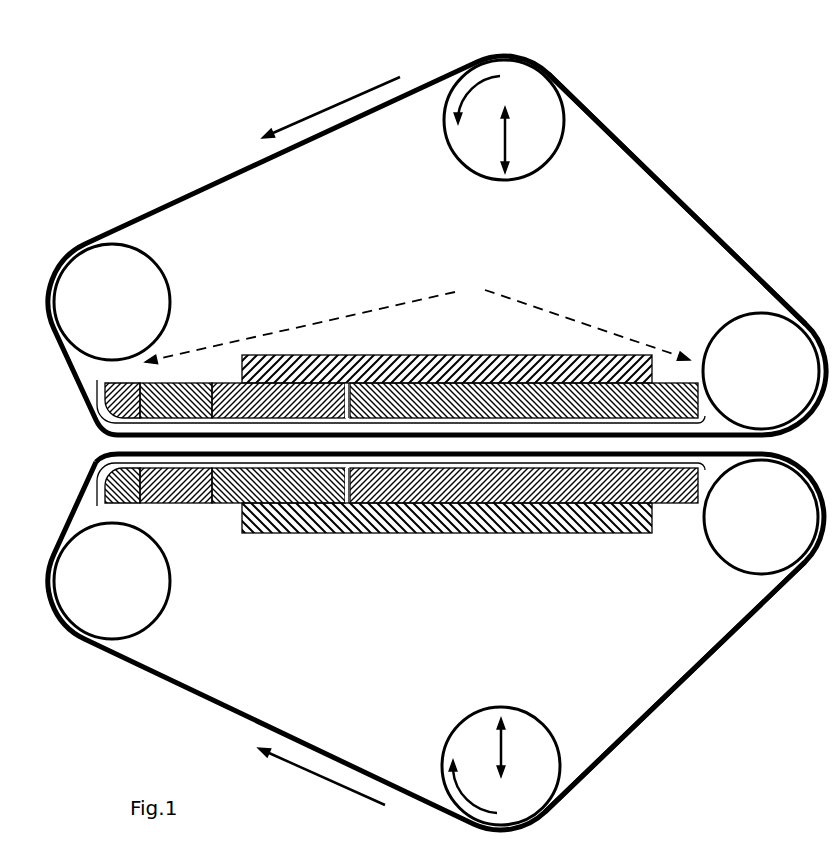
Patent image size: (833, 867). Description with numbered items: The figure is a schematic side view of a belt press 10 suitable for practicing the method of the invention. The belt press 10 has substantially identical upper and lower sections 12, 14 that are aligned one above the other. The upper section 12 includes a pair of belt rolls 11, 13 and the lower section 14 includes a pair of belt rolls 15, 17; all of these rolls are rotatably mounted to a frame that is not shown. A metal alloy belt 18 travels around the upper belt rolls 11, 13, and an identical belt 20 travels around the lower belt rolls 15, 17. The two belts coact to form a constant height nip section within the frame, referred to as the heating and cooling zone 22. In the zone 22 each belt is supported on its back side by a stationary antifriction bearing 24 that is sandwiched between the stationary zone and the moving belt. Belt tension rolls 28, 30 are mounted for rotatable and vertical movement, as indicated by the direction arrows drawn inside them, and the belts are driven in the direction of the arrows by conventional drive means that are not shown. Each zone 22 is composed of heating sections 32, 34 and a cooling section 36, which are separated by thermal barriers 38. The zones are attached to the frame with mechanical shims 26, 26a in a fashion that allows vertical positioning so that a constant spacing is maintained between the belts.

The belt press 10 is at (186, 124).
The belt roll 11 is at (101, 311).
The upper section 12 is at (437, 233).
The belt roll 13 is at (750, 374).
The lower section 14 is at (367, 666).
The belt roll 15 is at (89, 586).
The belt roll 17 is at (750, 531).
The metal alloy belt 18 is at (708, 225).
The belt 20 is at (670, 702).
The heating and cooling zone 22 is at (417, 318).
The stationary antifriction bearing 24 is at (100, 420).
The mechanical shim 26 is at (425, 355).
The mechanical shim 26a is at (432, 533).
The belt tension roll 28 is at (506, 101).
The belt tension roll 30 is at (503, 801).
The heating section 32 is at (165, 411).
The heating section 34 is at (264, 411).
The cooling section 36 is at (507, 412).
The thermal barrier 38 is at (352, 400).